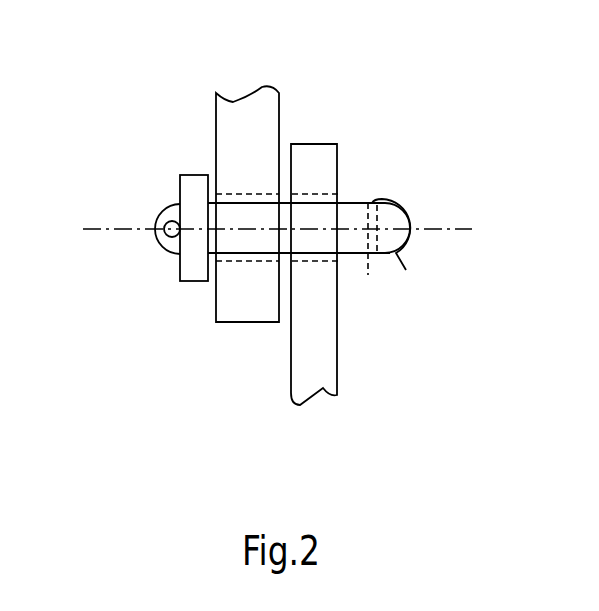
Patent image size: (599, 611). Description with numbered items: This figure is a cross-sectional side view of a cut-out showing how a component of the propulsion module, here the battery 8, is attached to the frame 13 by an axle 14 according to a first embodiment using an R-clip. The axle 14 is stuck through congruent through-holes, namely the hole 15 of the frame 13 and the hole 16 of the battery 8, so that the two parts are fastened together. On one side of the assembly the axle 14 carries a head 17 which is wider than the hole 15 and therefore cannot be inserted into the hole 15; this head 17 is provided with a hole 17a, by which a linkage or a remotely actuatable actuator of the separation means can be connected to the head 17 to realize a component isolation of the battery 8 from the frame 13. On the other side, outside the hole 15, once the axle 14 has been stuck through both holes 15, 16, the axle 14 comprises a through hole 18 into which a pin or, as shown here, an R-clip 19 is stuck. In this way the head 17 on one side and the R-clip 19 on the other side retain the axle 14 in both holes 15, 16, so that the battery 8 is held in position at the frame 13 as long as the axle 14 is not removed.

The battery 8 is at (337, 378).
The frame 13 is at (250, 322).
The axle 14 is at (355, 202).
The through-hole of the frame 15 is at (245, 193).
The through-hole of the battery 16 is at (307, 190).
The head of the axle 17 is at (203, 281).
The hole in the head 17a is at (168, 222).
The through hole of the axle 18 is at (368, 257).
The R-clip 19 is at (393, 200).